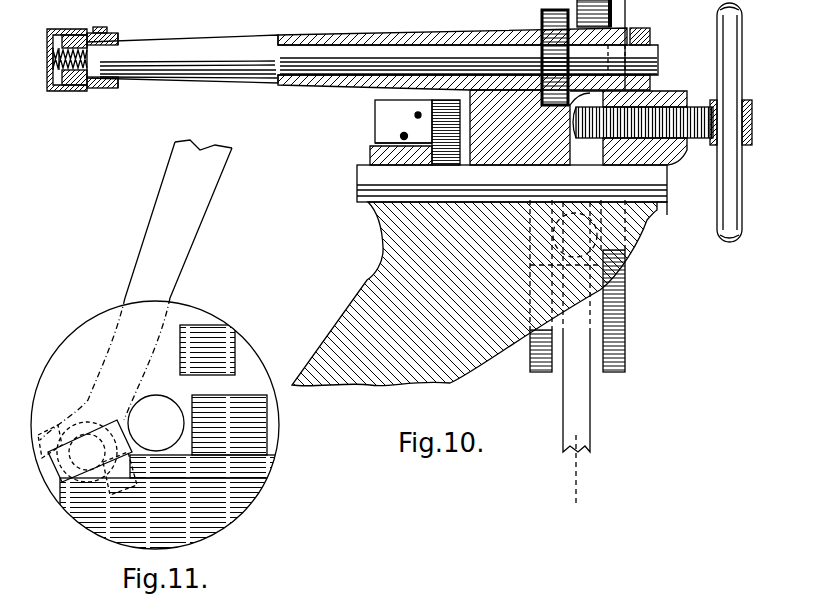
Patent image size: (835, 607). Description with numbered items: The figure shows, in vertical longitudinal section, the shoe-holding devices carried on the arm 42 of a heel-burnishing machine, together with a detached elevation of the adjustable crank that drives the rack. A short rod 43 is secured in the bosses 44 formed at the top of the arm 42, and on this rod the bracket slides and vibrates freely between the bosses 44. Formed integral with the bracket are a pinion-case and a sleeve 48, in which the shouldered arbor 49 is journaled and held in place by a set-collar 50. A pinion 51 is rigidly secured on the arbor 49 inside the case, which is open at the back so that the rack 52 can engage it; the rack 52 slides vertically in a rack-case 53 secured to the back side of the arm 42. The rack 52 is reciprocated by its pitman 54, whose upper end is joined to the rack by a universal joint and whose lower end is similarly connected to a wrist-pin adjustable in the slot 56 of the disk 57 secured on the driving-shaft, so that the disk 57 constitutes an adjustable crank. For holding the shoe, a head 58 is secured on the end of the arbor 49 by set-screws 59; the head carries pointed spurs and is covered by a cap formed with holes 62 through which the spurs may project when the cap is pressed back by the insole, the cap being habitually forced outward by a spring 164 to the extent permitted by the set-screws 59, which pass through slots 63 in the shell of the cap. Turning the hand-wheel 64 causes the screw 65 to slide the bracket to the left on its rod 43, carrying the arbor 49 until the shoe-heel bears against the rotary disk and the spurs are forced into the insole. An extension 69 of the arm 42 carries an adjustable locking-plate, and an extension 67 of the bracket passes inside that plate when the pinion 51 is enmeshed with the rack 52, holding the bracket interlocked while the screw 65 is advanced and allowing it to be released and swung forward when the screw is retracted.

In FIG. 10, the arm 42 is at (444, 301).
In FIG. 10, the short rod 43 is at (522, 183).
In FIG. 10, the bosses 44 is at (514, 212).
In FIG. 10, the sleeve 48 is at (464, 52).
In FIG. 10, the shouldered arbor 49 is at (232, 58).
In FIG. 10, the set-collar 50 is at (652, 36).
In FIG. 10, the pinion 51 is at (541, 20).
In FIG. 10, the rack 52 is at (48, 77).
In FIG. 10, the rack-case 53 is at (576, 311).
In FIG. 10, the pitman 54 is at (576, 353).
In FIG. 11, the pitman 54 is at (136, 290).
In FIG. 11, the slot 56 is at (62, 482).
In FIG. 11, the disk 57 is at (160, 427).
In FIG. 10, the head 58 is at (119, 37).
In FIG. 10, the set-screws 59 is at (102, 32).
In FIG. 10, the holes 62 is at (49, 42).
In FIG. 10, the slots 63 is at (82, 35).
In FIG. 10, the hand-wheel 64 is at (736, 122).
In FIG. 10, the screw 65 is at (643, 131).
In FIG. 10, the extension 67 is at (471, 128).
In FIG. 10, the extension 69 is at (401, 132).
In FIG. 10, the spring 164 is at (86, 60).